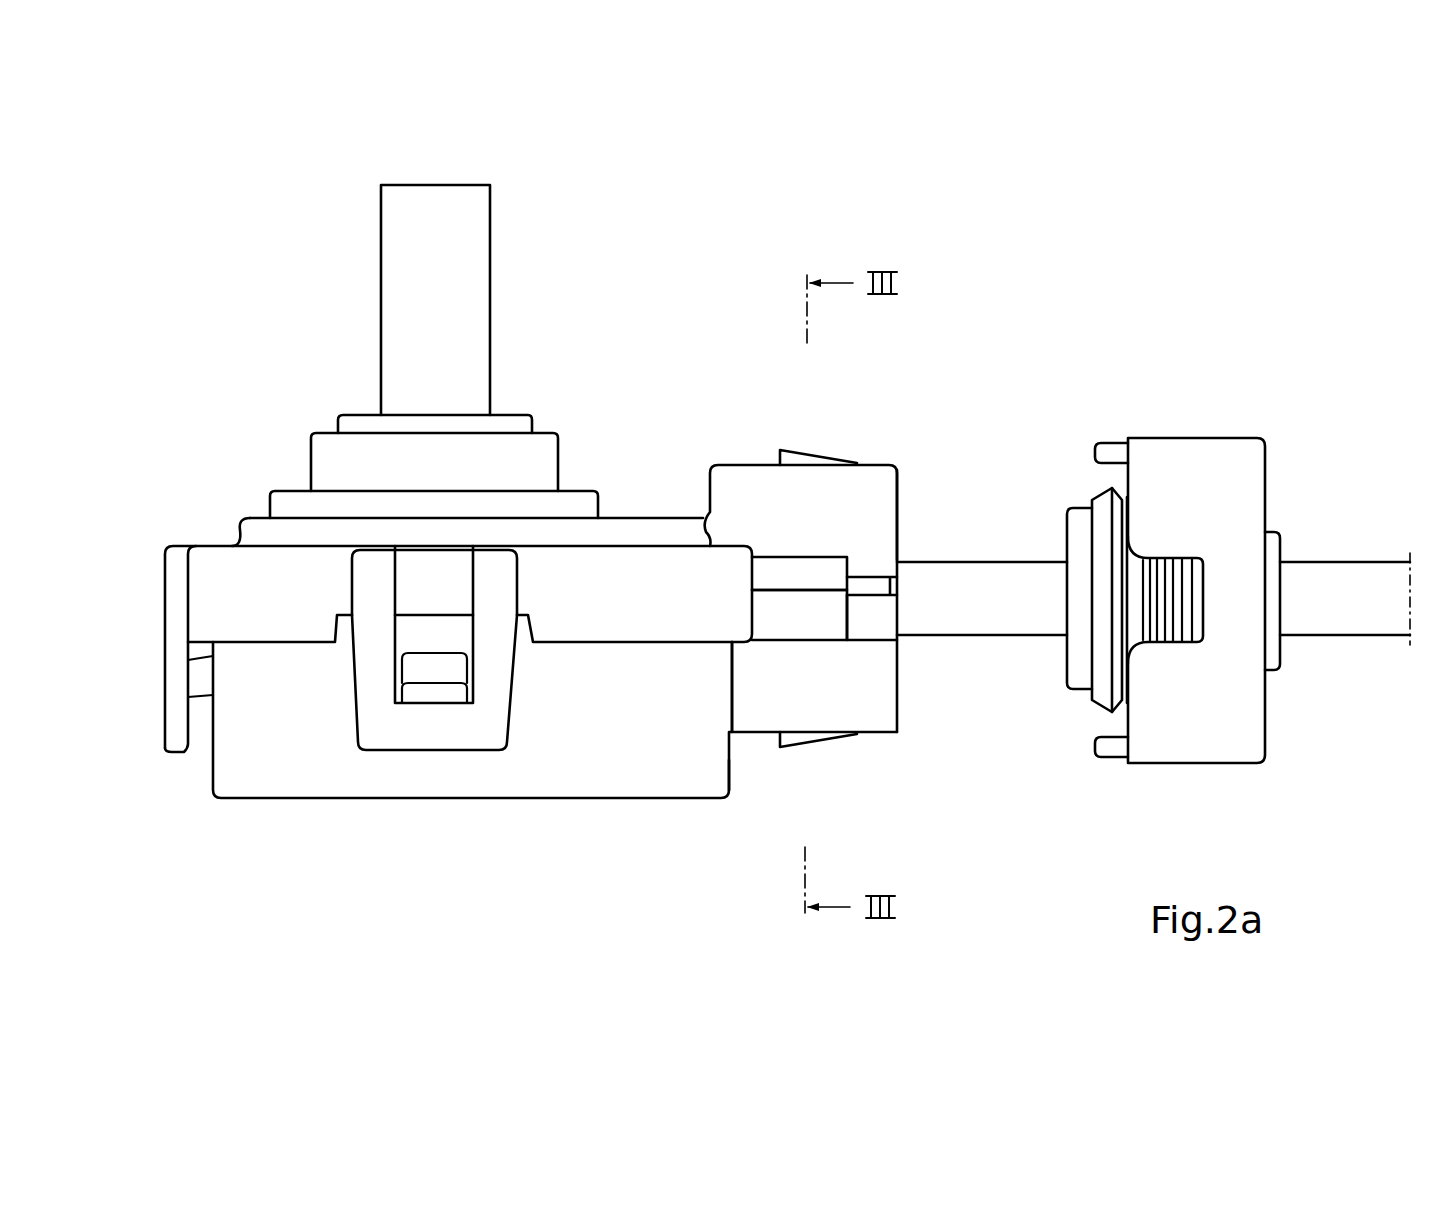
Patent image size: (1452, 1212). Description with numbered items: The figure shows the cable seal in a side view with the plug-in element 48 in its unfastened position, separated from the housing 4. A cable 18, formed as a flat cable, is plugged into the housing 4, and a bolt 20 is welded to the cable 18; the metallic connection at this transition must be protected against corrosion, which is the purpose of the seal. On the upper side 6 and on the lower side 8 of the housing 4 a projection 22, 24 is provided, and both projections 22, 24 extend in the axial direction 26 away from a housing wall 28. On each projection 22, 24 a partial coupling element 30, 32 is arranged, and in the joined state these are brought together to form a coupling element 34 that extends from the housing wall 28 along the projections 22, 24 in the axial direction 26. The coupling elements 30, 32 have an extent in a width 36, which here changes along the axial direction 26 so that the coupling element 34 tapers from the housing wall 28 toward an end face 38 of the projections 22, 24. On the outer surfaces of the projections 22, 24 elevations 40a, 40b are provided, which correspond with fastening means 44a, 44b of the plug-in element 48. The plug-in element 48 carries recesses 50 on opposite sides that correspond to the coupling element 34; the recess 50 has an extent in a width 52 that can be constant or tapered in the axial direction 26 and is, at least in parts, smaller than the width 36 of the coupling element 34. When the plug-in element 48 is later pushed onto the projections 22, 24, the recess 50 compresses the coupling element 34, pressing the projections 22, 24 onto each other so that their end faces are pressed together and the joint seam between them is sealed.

The housing 4 is at (238, 820).
The upper side 6 is at (220, 567).
The lower side 8 is at (313, 763).
The cable 18 is at (1357, 580).
The bolt 20 is at (463, 263).
The projection 22 is at (873, 490).
The projection 24 is at (872, 707).
The axial direction 26 is at (1025, 437).
The housing wall 28 is at (732, 775).
The partial coupling element 30 is at (827, 572).
The partial coupling element 32 is at (822, 627).
The coupling element 34 is at (858, 623).
The width 36 is at (748, 555).
The end face 38 is at (897, 490).
The elevation 40a is at (800, 450).
The elevation 40b is at (797, 738).
The fastening means 44a is at (1112, 452).
The fastening means 44b is at (1110, 748).
The plug-in element 48 is at (1212, 413).
The recess 50 is at (1165, 642).
The width 52 is at (1208, 560).